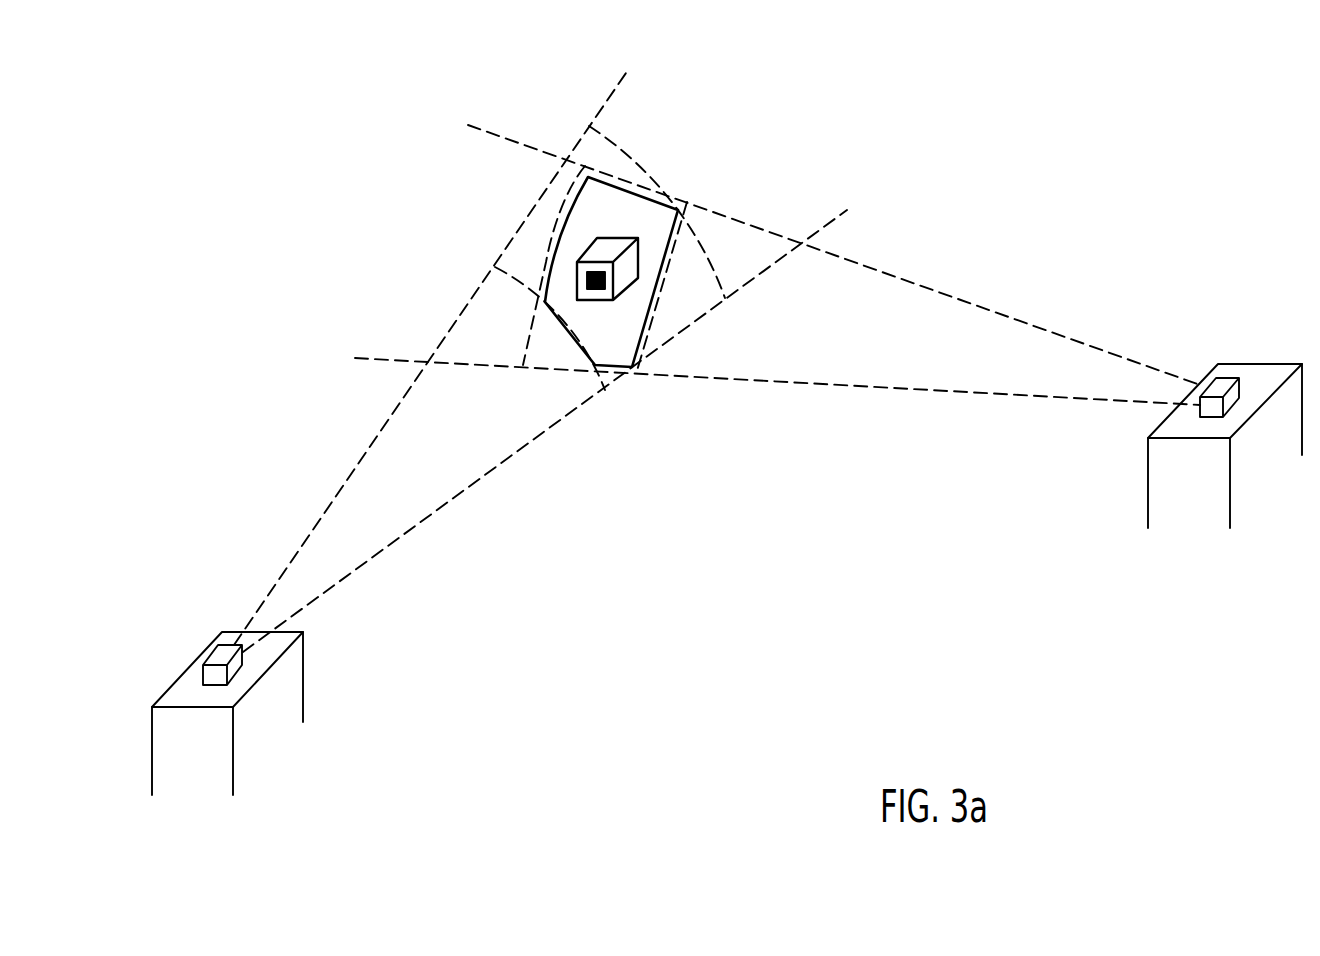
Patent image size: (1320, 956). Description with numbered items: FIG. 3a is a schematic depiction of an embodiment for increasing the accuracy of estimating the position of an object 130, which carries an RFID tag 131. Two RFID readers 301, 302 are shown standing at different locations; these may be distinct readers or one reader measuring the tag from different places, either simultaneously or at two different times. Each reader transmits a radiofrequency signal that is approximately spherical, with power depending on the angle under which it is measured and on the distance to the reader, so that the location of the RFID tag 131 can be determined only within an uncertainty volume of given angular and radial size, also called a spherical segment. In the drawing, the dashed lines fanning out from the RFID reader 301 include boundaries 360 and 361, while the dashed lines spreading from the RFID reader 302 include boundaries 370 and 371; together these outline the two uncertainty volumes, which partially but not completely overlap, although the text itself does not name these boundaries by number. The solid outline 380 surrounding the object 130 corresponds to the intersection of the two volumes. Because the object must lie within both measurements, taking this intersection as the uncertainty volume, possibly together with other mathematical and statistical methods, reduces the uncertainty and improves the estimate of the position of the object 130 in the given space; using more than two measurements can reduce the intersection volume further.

The object 130 is at (609, 243).
The RFID tag 131 is at (596, 289).
The RFID reader 301 is at (298, 663).
The RFID reader 302 is at (1152, 491).
The field of view boundary of first camera 360 is at (473, 487).
The range boundary of first camera 361 is at (623, 150).
The field of view boundary of second camera 370 is at (984, 307).
The range boundary of second camera 371 is at (684, 217).
The overlapping field of view region 380 is at (649, 206).